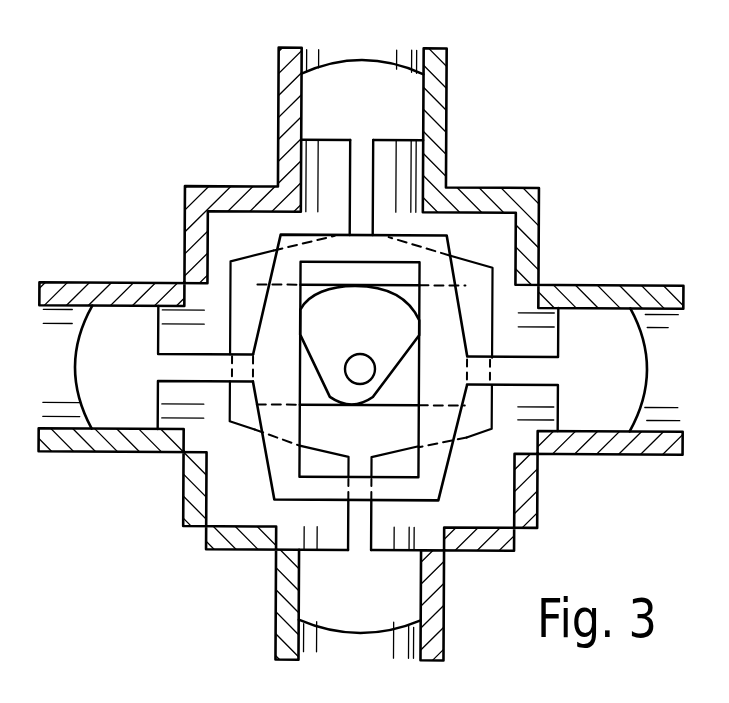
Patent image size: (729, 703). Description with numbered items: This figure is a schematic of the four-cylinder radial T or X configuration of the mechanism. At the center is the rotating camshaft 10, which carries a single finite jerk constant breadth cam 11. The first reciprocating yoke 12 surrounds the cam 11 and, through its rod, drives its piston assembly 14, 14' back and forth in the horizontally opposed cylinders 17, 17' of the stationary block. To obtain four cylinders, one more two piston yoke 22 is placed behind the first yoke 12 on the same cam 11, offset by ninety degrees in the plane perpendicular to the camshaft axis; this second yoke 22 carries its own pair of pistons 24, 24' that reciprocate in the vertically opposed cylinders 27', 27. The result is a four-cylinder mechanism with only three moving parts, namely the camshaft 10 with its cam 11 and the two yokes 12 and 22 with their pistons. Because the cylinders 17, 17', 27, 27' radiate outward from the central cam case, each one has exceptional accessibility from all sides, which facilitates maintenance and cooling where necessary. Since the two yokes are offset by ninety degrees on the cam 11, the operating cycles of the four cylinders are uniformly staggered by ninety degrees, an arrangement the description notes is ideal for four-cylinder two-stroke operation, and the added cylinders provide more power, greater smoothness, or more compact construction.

The camshaft 10 is at (360, 369).
The finite jerk constant breadth cam 11 is at (364, 332).
The yoke 12 is at (283, 480).
The piston assembly 14 is at (164, 368).
The outlet port 14' is at (557, 370).
The cylinder 17 is at (61, 362).
The cylinder 17' is at (668, 367).
The two piston yoke 22 is at (238, 428).
The bottom port 24 is at (360, 580).
The top port 24' is at (362, 136).
The cylinder 27 is at (355, 653).
The cylinder 27' is at (360, 43).